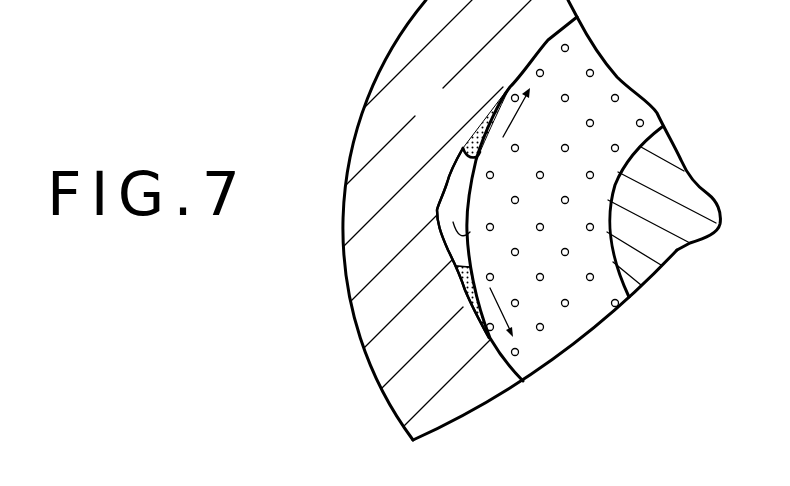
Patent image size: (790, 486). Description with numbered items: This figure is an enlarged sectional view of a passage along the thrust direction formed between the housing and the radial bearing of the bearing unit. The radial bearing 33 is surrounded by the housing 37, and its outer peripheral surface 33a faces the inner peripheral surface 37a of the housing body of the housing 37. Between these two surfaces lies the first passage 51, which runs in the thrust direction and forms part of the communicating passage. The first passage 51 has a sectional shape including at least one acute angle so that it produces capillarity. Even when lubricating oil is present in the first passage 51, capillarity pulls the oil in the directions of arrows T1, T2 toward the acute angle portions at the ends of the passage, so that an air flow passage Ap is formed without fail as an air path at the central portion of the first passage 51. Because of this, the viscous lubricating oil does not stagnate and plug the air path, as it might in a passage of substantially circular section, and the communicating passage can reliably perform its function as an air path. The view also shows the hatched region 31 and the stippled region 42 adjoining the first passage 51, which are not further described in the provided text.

The hatched body portion 31 is at (663, 228).
The radial bearing 33 is at (548, 330).
The outer peripheral surface of the radial bearing 33a is at (468, 222).
The housing 37 is at (354, 158).
The inner peripheral surface of the housing body 37a is at (447, 185).
The adhesive layer 42 is at (460, 290).
The first passage 51 is at (450, 220).
The air flow passage Ap is at (437, 202).
The arrow T1 is at (511, 302).
The arrow T2 is at (525, 113).